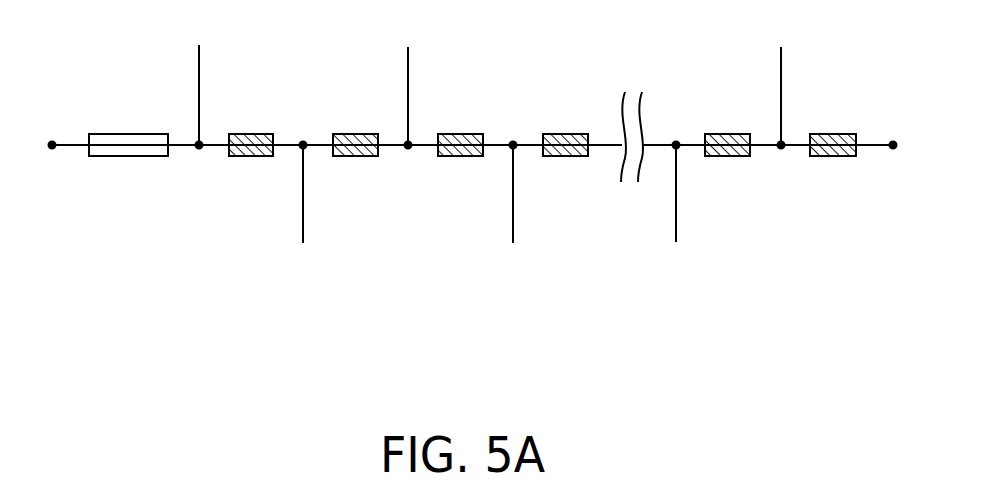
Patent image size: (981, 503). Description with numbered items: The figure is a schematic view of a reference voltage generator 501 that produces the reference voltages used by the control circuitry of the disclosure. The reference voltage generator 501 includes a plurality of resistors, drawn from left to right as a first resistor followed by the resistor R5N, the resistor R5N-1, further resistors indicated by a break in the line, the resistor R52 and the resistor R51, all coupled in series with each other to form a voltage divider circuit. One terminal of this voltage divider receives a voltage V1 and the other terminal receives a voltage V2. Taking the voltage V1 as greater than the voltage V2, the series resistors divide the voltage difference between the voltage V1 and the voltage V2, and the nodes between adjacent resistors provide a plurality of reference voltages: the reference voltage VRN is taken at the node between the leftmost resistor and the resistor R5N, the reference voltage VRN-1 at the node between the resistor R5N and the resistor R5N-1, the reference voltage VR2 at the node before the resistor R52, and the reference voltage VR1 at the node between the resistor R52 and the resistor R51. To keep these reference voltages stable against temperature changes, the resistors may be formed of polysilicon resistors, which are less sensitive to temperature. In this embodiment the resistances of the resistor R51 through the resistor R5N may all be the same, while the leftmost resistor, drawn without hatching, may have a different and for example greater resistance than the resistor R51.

The reference voltage generator 501 is at (892, 358).
The voltage V1 is at (36, 144).
The voltage V2 is at (912, 146).
The resistor R5N is at (258, 136).
The resistor R5N-1 is at (362, 136).
The resistor R52 is at (732, 136).
The resistor R51 is at (837, 136).
The reference voltage VRN is at (199, 79).
The reference voltage VRN-1 is at (303, 214).
The reference voltage VR2 is at (675, 214).
The reference voltage VR1 is at (782, 79).